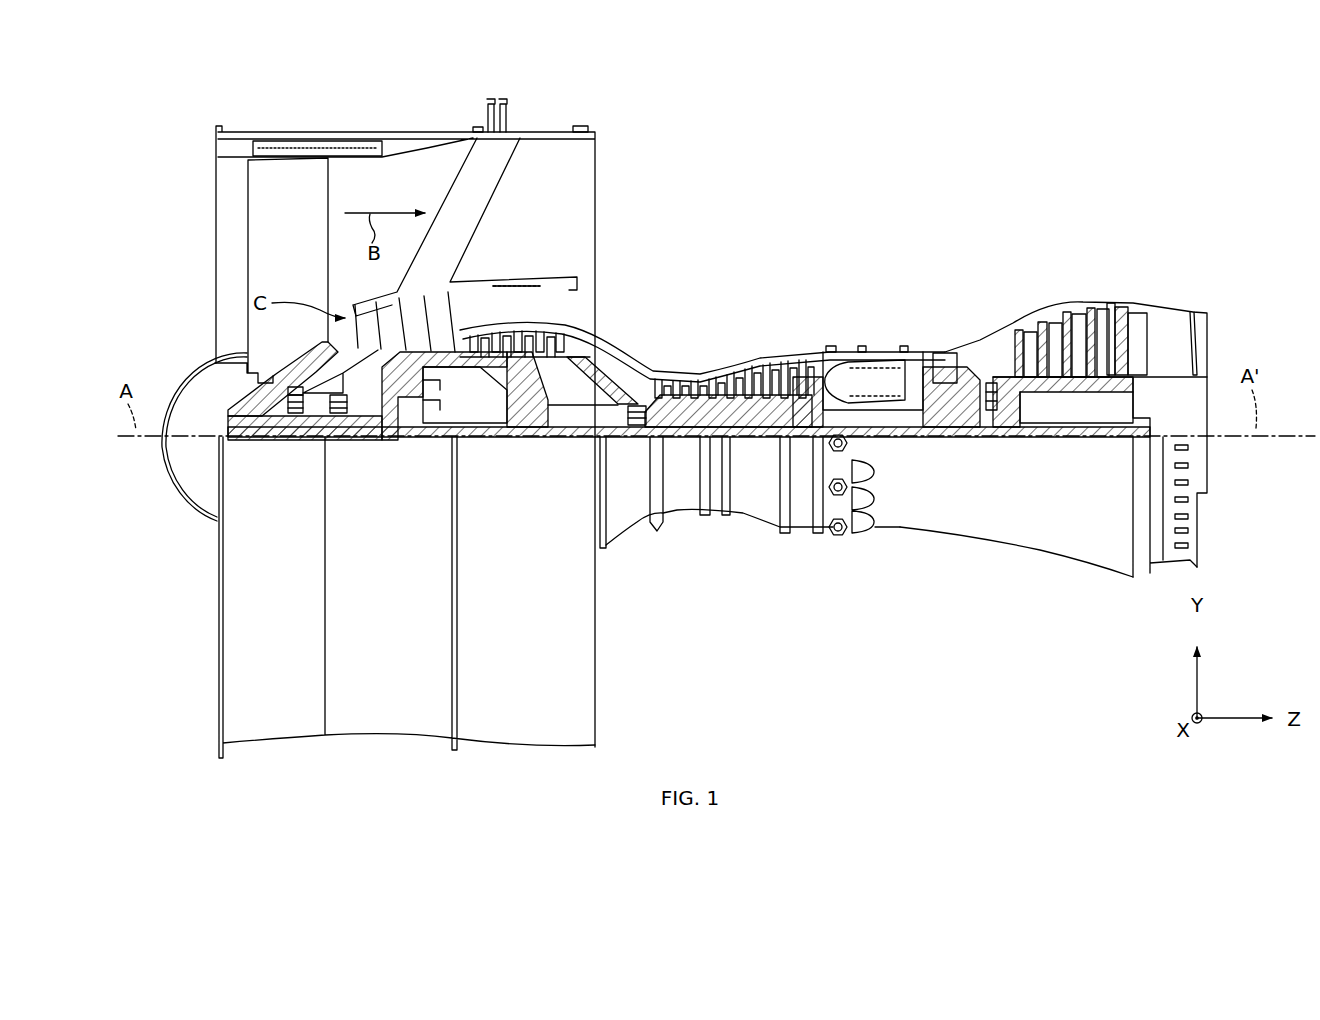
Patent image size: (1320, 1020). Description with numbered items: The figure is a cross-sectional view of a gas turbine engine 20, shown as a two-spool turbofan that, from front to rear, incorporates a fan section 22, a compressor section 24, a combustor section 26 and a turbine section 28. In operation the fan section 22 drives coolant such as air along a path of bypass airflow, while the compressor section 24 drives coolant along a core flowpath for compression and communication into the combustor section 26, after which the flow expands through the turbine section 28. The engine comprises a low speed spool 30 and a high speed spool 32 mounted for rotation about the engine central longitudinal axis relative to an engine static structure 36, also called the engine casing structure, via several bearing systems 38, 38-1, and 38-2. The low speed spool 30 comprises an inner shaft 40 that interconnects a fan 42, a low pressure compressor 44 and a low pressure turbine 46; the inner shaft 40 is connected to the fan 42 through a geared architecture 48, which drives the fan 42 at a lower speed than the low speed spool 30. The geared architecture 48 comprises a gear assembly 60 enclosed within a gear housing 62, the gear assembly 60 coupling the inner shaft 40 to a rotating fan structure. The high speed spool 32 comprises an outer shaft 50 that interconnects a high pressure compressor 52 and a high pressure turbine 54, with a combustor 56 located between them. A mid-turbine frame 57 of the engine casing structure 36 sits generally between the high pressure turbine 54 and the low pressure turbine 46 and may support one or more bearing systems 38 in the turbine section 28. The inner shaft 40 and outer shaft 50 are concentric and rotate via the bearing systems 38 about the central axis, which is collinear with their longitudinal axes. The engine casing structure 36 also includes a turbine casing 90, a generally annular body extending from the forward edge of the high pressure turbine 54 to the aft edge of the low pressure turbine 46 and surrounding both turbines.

The gas turbine engine 20 is at (920, 166).
The fan section 22 is at (445, 110).
The compressor section 24 is at (452, 240).
The combustor section 26 is at (822, 240).
The turbine section 28 is at (1135, 240).
The low speed spool 30 is at (762, 448).
The high speed spool 32 is at (808, 390).
The engine static structure 36 is at (900, 505).
The bearing system 38 is at (990, 432).
The bearing system 38-1 is at (300, 425).
The bearing system 38-2 is at (548, 444).
The inner shaft 40 is at (614, 440).
The fan 42 is at (272, 261).
The low pressure compressor 44 is at (530, 338).
The low pressure turbine 46 is at (1073, 330).
The geared architecture 48 is at (406, 478).
The outer shaft 50 is at (870, 424).
The high pressure compressor 52 is at (750, 368).
The high pressure turbine 54 is at (943, 352).
The combustor 56 is at (880, 375).
The mid-turbine frame 57 is at (985, 350).
The gear assembly 60 is at (425, 405).
The gear housing 62 is at (425, 385).
The turbine casing 90 is at (1142, 617).